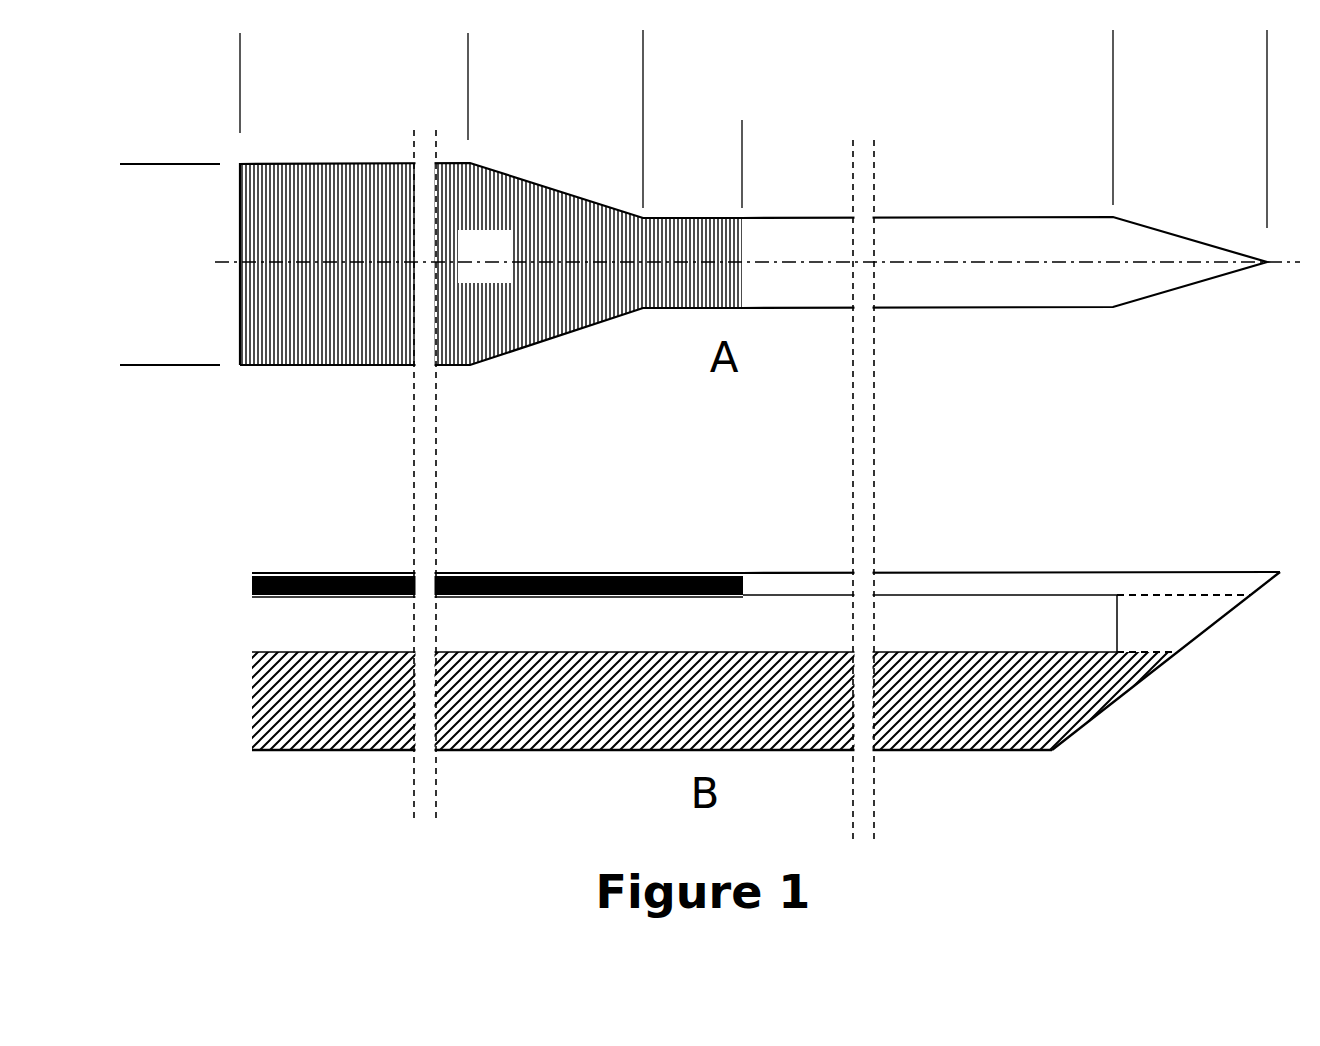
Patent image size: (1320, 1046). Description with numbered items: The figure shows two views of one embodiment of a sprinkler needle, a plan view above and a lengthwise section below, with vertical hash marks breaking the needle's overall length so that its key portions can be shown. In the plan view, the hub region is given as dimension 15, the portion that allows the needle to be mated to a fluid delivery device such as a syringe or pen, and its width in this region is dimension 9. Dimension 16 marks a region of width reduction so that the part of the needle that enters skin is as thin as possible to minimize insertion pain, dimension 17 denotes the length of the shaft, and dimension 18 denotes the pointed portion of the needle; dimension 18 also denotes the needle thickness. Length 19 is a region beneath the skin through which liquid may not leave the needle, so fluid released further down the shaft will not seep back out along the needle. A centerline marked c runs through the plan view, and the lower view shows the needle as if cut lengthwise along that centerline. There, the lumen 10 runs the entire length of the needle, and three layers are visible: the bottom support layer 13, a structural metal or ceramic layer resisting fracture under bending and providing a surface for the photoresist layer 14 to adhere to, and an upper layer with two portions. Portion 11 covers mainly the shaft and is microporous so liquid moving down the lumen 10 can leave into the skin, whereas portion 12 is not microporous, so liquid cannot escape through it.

The width of the needle in the hub region 9 is at (163, 164).
The lumen 10 is at (668, 630).
The microporous portion of the upper layer 11 is at (1072, 583).
The non-microporous portion of the upper layer 12 is at (602, 588).
The support layer 13 is at (362, 710).
The photoresist layer 14 is at (1182, 615).
The hub region length 15 is at (468, 87).
The width reduction region length 16 is at (643, 87).
The shaft length 17 is at (1113, 87).
The point length / needle thickness 18 is at (1113, 87).
The non-delivery length 19 is at (643, 163).